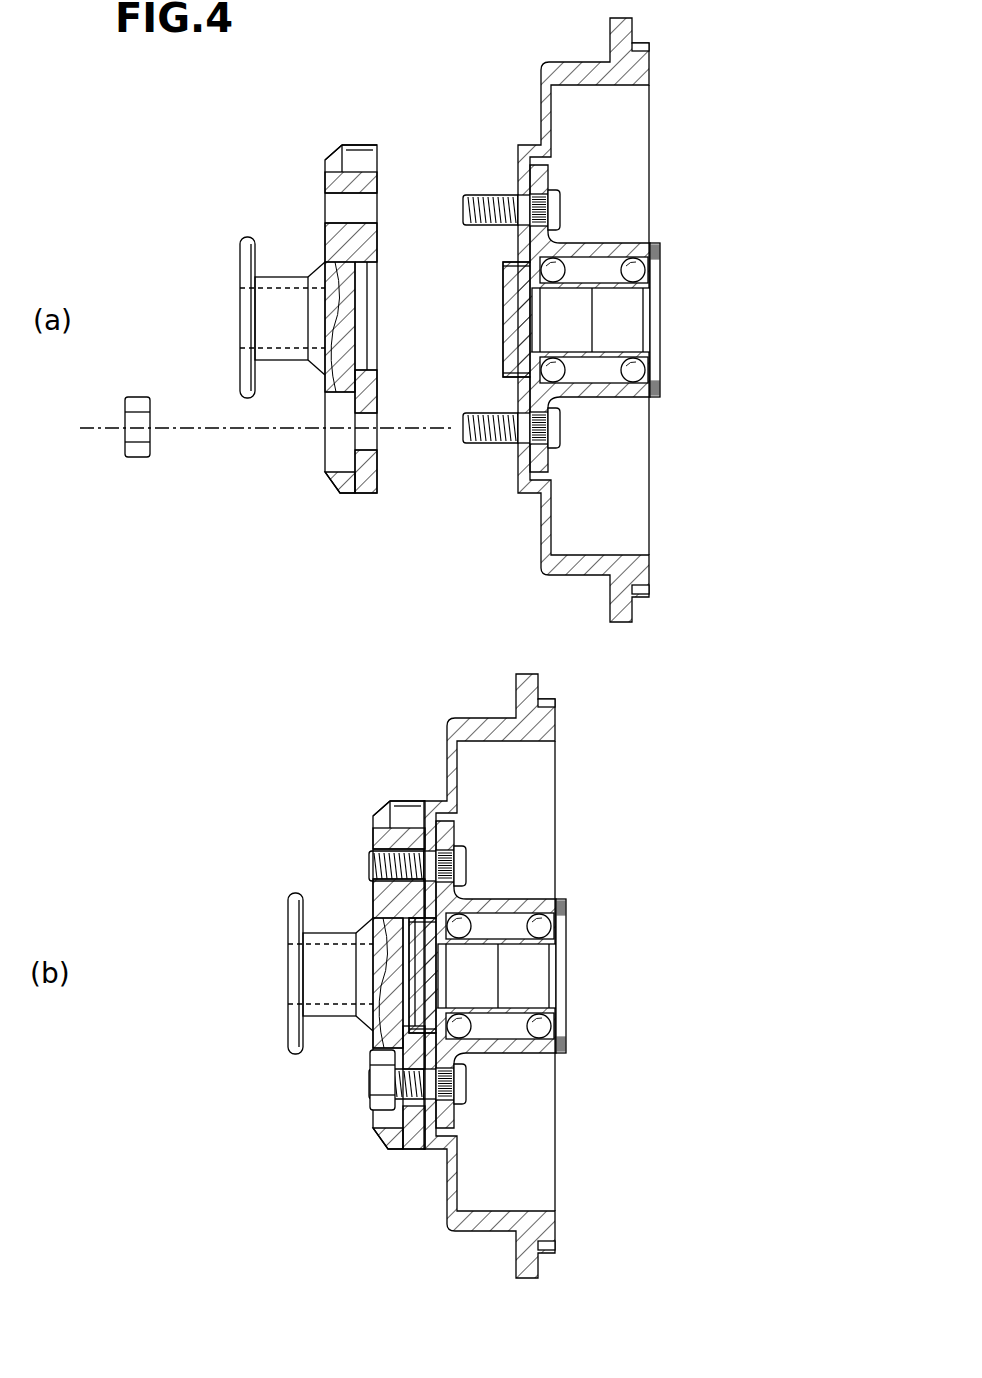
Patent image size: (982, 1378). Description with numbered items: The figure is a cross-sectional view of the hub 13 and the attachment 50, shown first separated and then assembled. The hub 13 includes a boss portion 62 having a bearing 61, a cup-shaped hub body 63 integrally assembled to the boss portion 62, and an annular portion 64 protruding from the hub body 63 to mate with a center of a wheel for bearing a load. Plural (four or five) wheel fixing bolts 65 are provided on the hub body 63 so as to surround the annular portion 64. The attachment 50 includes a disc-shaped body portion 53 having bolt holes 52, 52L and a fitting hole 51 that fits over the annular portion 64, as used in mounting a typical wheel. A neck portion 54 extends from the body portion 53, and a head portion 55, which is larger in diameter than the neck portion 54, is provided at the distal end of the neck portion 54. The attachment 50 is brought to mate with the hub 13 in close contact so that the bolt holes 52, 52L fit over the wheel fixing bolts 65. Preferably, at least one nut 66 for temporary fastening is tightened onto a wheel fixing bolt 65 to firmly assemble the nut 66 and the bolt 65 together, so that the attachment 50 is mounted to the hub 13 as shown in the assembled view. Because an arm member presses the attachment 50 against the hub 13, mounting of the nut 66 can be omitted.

The hub 13 is at (526, 661).
The attachment 50 is at (314, 606).
The fitting hole 51 is at (362, 365).
The bolt hole 52 is at (378, 200).
The bolt hole 52L is at (380, 432).
The body portion 53 is at (364, 143).
The neck portion 54 is at (290, 277).
The head portion 55 is at (248, 240).
The bearing 61 is at (656, 378).
The boss portion 62 is at (598, 393).
The hub body 63 is at (640, 567).
The annular portion 64 is at (503, 262).
The wheel fixing bolt 65 is at (483, 197).
The nut 66 is at (138, 457).